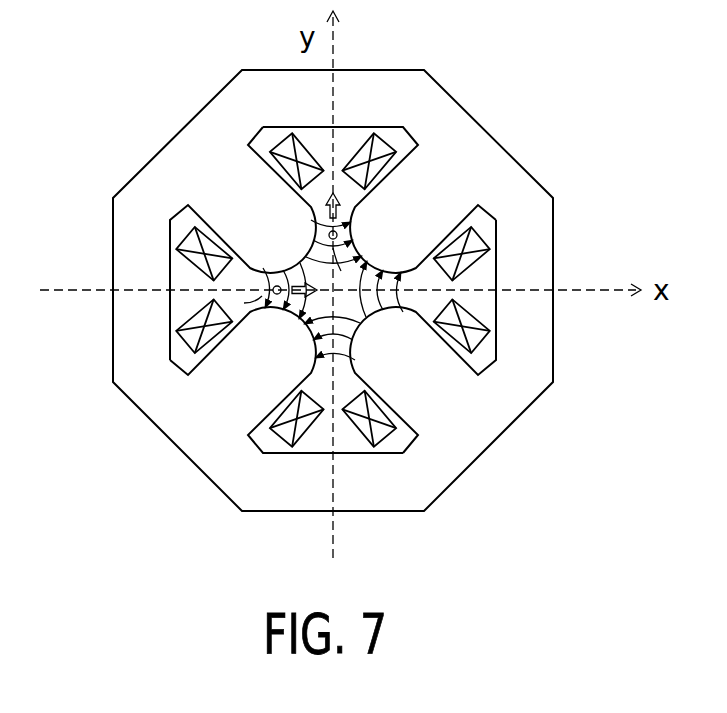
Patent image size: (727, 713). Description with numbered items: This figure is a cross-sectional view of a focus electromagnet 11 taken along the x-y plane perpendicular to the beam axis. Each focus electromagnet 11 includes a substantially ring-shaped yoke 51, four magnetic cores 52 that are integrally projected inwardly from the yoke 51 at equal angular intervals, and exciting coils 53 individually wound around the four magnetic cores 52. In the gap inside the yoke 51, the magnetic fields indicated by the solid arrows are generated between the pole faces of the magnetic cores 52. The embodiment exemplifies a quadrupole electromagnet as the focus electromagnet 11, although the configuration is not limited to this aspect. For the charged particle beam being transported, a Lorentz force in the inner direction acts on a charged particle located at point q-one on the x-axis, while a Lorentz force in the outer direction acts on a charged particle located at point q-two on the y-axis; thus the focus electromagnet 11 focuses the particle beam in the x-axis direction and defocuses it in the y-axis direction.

The focus electromagnet 11 is at (94, 108).
The yoke 51 is at (477, 119).
The magnetic core 52 is at (256, 220).
The exciting coil 53 is at (193, 317).